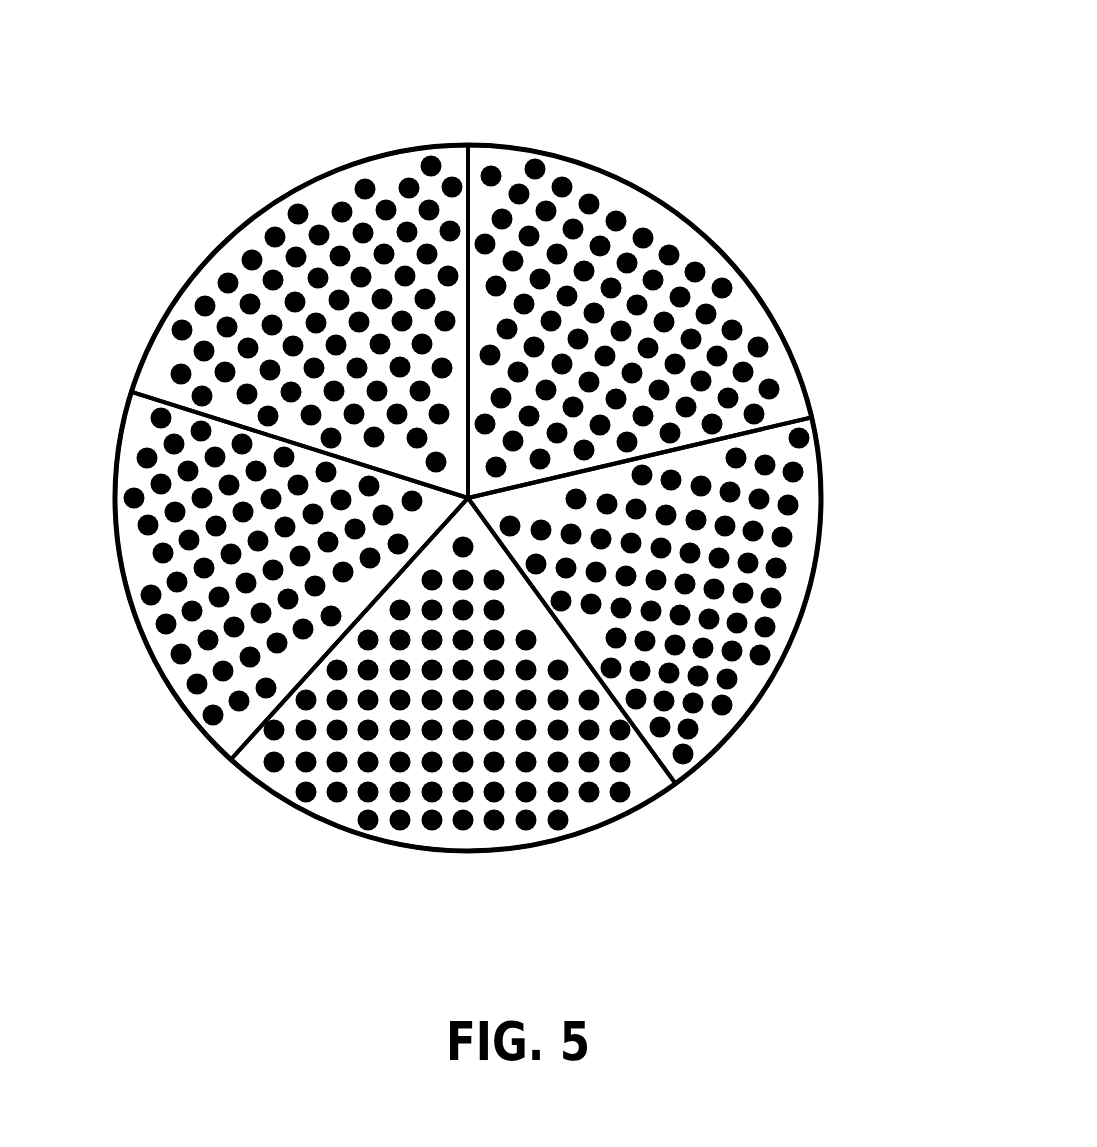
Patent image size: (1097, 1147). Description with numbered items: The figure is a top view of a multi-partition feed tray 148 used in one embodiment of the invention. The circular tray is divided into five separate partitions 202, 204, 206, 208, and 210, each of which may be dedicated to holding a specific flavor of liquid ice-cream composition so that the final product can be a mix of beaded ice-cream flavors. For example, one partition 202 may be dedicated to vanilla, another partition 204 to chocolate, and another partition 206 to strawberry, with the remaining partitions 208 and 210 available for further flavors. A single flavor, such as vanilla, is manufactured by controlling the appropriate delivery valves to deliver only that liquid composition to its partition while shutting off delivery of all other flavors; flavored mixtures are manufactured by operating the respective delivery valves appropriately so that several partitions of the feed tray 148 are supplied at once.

The feed tray 148 is at (647, 87).
The partition 202 is at (660, 197).
The partition 204 is at (273, 192).
The partition 206 is at (110, 503).
The partition 208 is at (473, 855).
The partition 210 is at (820, 560).